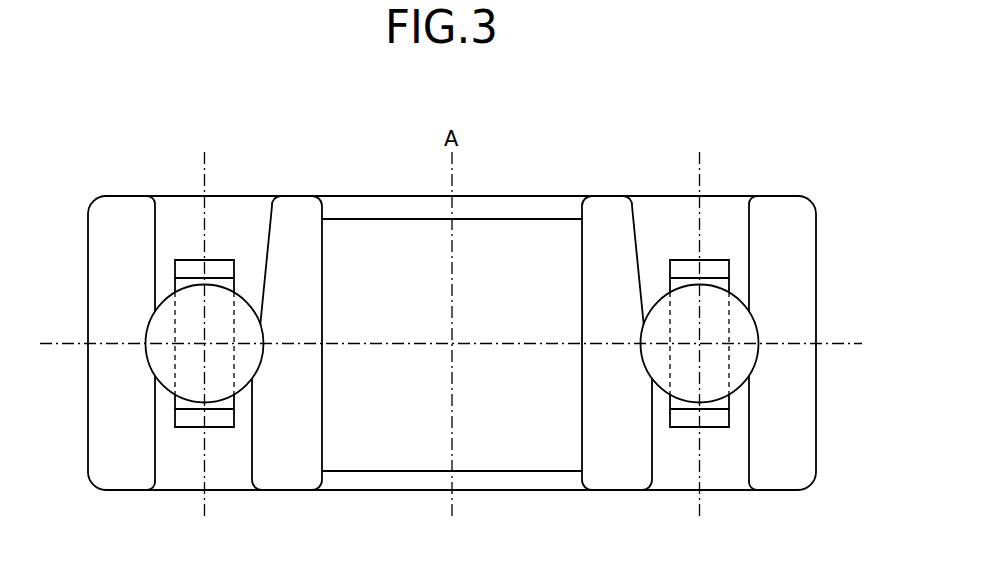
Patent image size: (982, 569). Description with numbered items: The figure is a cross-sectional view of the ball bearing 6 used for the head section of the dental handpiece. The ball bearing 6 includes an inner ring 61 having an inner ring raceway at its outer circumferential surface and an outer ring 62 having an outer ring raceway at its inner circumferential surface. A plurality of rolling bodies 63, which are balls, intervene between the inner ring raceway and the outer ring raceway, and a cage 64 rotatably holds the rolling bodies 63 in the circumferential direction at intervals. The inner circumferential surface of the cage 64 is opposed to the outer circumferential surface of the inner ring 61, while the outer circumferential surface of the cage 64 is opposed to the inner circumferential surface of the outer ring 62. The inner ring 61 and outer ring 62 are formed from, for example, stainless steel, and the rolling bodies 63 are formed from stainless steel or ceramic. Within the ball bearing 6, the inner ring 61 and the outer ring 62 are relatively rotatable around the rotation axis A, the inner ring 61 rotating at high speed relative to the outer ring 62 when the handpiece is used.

The ball bearing 6 is at (661, 135).
The inner ring 61 is at (287, 478).
The outer ring 62 is at (122, 478).
The rolling bodies (balls) 63 is at (160, 362).
The cage 64 is at (218, 270).